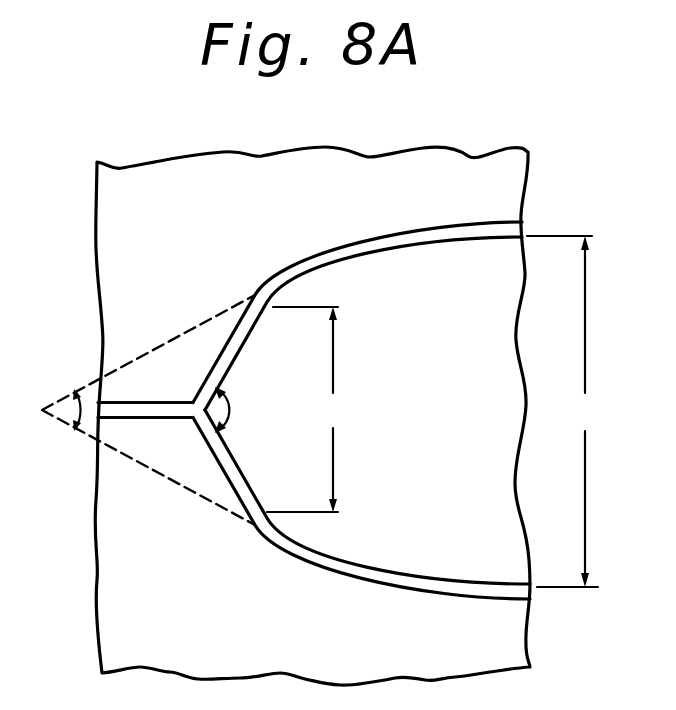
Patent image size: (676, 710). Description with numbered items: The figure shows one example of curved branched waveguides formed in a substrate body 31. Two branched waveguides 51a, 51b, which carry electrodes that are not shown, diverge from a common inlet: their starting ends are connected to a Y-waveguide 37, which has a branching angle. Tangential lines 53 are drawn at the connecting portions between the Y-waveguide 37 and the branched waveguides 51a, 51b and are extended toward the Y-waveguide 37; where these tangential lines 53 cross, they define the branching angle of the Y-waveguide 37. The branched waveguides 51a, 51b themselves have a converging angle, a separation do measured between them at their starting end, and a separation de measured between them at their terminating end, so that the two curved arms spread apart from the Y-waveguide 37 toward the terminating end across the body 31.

The substrate block 31 is at (159, 184).
The Y-waveguide 37 is at (248, 521).
The branched waveguide 51a is at (517, 209).
The branched waveguide 51b is at (523, 575).
The tangential lines 53 is at (148, 344).
The separation at the starting end do is at (307, 409).
The separation at the terminating end de is at (564, 411).